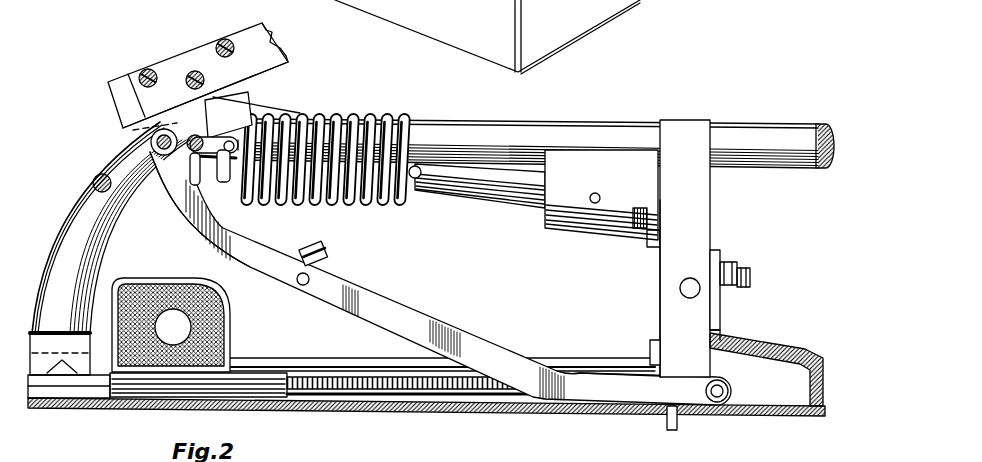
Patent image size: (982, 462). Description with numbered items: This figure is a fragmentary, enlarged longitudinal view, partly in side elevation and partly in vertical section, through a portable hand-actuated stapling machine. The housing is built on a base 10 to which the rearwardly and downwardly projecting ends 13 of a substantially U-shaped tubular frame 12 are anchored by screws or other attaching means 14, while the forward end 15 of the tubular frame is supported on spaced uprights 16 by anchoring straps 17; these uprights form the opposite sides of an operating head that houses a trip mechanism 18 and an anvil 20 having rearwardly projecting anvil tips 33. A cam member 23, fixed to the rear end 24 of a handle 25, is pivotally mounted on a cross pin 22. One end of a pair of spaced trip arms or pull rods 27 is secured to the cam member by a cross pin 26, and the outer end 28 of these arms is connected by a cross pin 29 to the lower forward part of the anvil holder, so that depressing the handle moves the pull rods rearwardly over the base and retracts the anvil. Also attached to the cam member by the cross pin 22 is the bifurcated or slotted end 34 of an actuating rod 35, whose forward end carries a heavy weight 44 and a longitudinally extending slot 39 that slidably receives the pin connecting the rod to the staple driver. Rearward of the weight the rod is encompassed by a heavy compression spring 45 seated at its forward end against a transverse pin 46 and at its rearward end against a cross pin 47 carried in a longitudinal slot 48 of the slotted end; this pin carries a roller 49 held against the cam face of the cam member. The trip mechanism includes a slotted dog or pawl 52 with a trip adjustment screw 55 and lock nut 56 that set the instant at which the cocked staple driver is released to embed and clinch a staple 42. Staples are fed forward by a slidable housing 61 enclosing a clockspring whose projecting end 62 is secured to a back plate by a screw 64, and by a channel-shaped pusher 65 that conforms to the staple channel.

The base 10 is at (425, 407).
The tubular frame 12 is at (573, 108).
The rearwardly and downwardly projecting ends 13 is at (87, 327).
The screws or other attaching means 14 is at (62, 375).
The forward end of the tubular frame 15 is at (780, 127).
The spaced uprights 16 is at (725, 238).
The anchoring straps 17 is at (693, 121).
The trip mechanism 18 is at (731, 313).
The anvil 20 is at (688, 424).
The cross pin 22 is at (192, 136).
The cam member 23 is at (206, 110).
The rear end of the handle 24 is at (187, 44).
The handle 25 is at (301, 70).
The cross pin 26 is at (151, 140).
The trip arms or pull rods 27 is at (337, 283).
The outer end of the trip arms 28 is at (698, 386).
The cross pin 29 is at (733, 388).
The anvil tips 33 is at (665, 420).
The bifurcated or slotted end 34 is at (186, 162).
The actuating rod 35 is at (468, 190).
The longitudinally extending slot 39 is at (647, 206).
The staple 42 is at (400, 376).
The heavy weight 44 is at (587, 163).
The compression spring 45 is at (330, 130).
The transverse pin 46 is at (418, 168).
The cross pin 47 is at (232, 152).
The longitudinal slot 48 is at (192, 160).
The roller 49 is at (238, 138).
The dog or pawl 52 is at (717, 326).
The trip adjustment screw 55 is at (731, 263).
The lock nut 56 is at (752, 273).
The slidable housing 61 is at (231, 323).
The projecting end of the clockspring 62 is at (593, 365).
The screw or other attaching means 64 is at (655, 346).
The channel-shaped pusher 65 is at (257, 373).